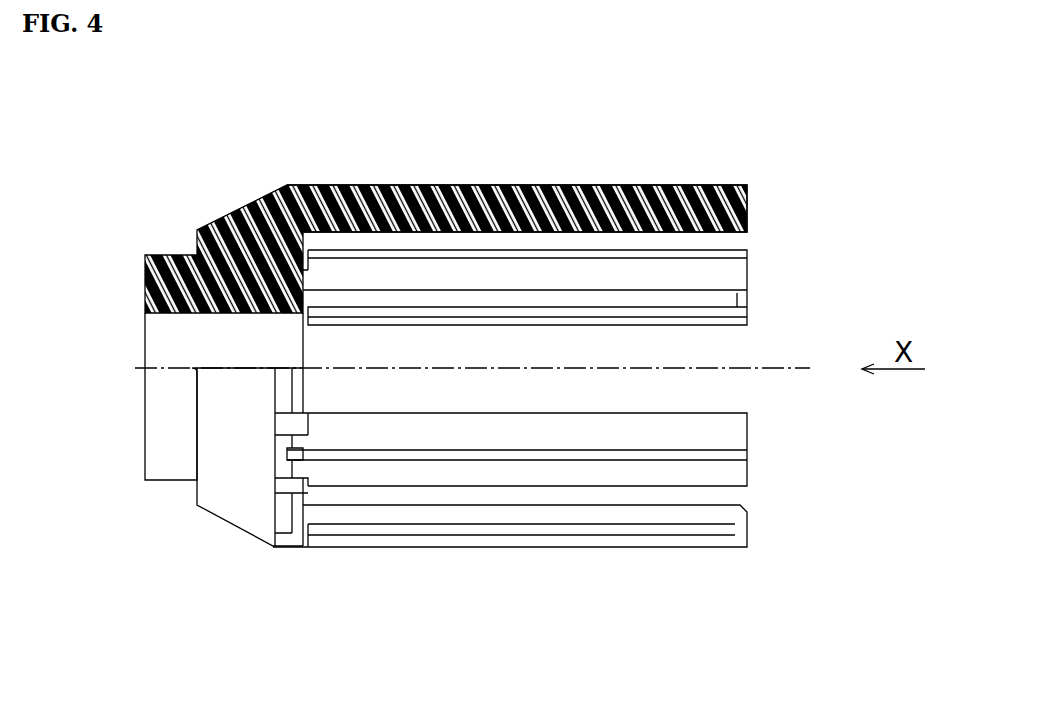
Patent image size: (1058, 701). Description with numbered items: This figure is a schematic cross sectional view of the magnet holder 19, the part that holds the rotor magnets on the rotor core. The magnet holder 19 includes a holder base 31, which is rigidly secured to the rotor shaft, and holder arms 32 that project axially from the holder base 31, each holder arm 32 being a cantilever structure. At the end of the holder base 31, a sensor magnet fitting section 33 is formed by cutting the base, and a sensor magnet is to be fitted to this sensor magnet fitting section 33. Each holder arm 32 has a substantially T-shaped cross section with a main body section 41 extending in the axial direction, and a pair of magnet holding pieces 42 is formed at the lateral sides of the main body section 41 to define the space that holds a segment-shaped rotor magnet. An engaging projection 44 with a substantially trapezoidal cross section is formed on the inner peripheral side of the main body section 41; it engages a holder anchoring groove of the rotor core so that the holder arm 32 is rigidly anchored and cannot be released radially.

The magnet holder 19 is at (248, 205).
The main body section 41 is at (637, 205).
The magnet holding pieces 42 is at (738, 272).
The engaging projection 44 is at (745, 300).
The holder base 31 is at (258, 507).
The holder arms 32 is at (661, 548).
The sensor magnet fitting section 33 is at (178, 462).